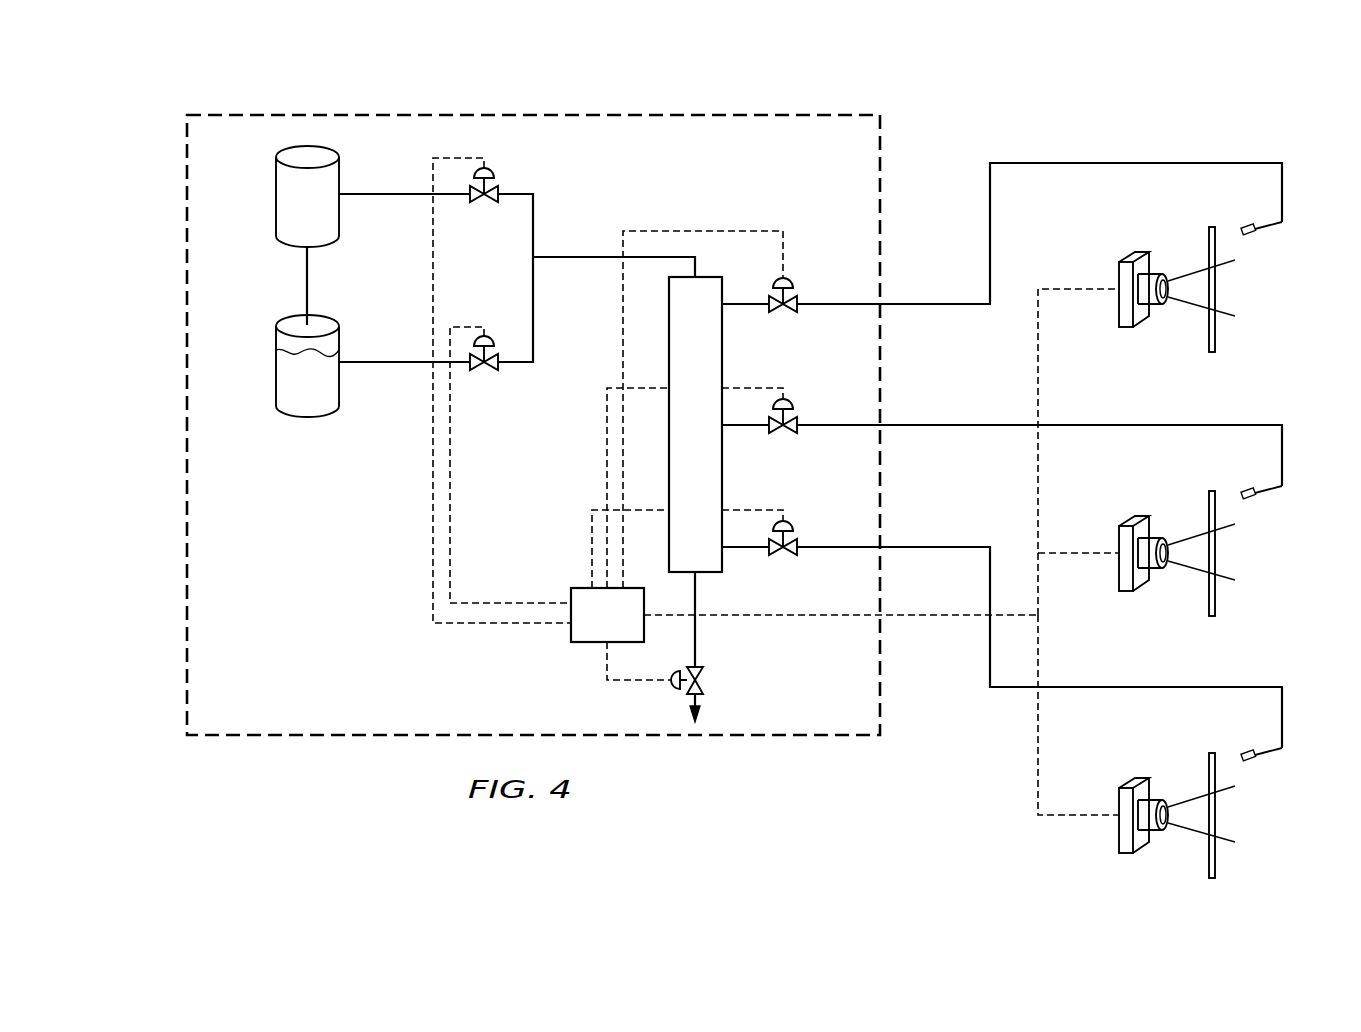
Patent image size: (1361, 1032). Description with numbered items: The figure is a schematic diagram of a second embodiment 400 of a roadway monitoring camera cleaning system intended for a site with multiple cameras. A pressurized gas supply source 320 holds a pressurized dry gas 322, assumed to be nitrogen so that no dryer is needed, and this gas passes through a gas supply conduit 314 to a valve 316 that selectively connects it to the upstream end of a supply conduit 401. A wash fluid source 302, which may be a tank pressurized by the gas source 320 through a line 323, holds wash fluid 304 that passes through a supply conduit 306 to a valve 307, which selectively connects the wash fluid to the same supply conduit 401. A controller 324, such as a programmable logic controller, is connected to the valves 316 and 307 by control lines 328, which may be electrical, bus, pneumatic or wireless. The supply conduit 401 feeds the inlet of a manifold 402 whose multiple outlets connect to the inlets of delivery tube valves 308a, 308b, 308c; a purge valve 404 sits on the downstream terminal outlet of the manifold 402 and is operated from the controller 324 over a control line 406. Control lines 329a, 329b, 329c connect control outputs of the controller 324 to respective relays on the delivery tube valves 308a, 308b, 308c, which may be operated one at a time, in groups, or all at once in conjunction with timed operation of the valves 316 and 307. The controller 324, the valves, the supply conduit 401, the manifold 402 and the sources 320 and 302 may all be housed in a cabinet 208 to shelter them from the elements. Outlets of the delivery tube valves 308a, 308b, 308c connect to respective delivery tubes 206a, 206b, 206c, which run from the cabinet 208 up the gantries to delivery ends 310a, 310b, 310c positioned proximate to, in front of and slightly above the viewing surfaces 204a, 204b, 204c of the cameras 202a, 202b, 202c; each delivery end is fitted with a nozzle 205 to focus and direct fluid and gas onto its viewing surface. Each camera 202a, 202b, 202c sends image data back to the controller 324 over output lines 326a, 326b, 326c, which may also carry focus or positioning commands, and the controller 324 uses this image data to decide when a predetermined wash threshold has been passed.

The second embodiment 400 is at (985, 108).
The cabinet 208 is at (373, 737).
The pressurized gas supply source 320 is at (273, 196).
The pressurized dry gas 322 is at (308, 198).
The line 323 is at (307, 276).
The wash fluid source 302 is at (273, 366).
The wash fluid 304 is at (308, 384).
The gas supply conduit 314 is at (370, 190).
The valve 316 is at (495, 172).
The supply conduit 306 is at (390, 360).
The valve 307 is at (486, 332).
The control lines 328 is at (450, 396).
The supply conduit 401 is at (575, 255).
The manifold 402 is at (714, 438).
The controller 324 is at (626, 630).
The control line 406 is at (607, 665).
The purge valve 404 is at (704, 683).
The control line 329a is at (690, 230).
The control line 329b is at (607, 430).
The control line 329c is at (592, 540).
The delivery tube valve 308a is at (797, 282).
The delivery tube valve 308b is at (797, 403).
The delivery tube valve 308c is at (797, 525).
The delivery tube 206a is at (925, 302).
The delivery tube 206b is at (925, 423).
The delivery tube 206c is at (925, 545).
The output line 326a is at (1088, 288).
The output line 326b is at (1088, 551).
The output line 326c is at (1088, 813).
The camera 202a is at (1143, 318).
The camera 202b is at (1177, 577).
The camera 202c is at (1177, 839).
The camera viewing surface 204a is at (1217, 332).
The camera viewing surface 204b is at (1254, 563).
The camera viewing surface 204c is at (1254, 825).
The delivery end 310a is at (1268, 226).
The delivery end 310b is at (1289, 509).
The delivery end 310c is at (1289, 771).
The nozzle 205 is at (1246, 225).